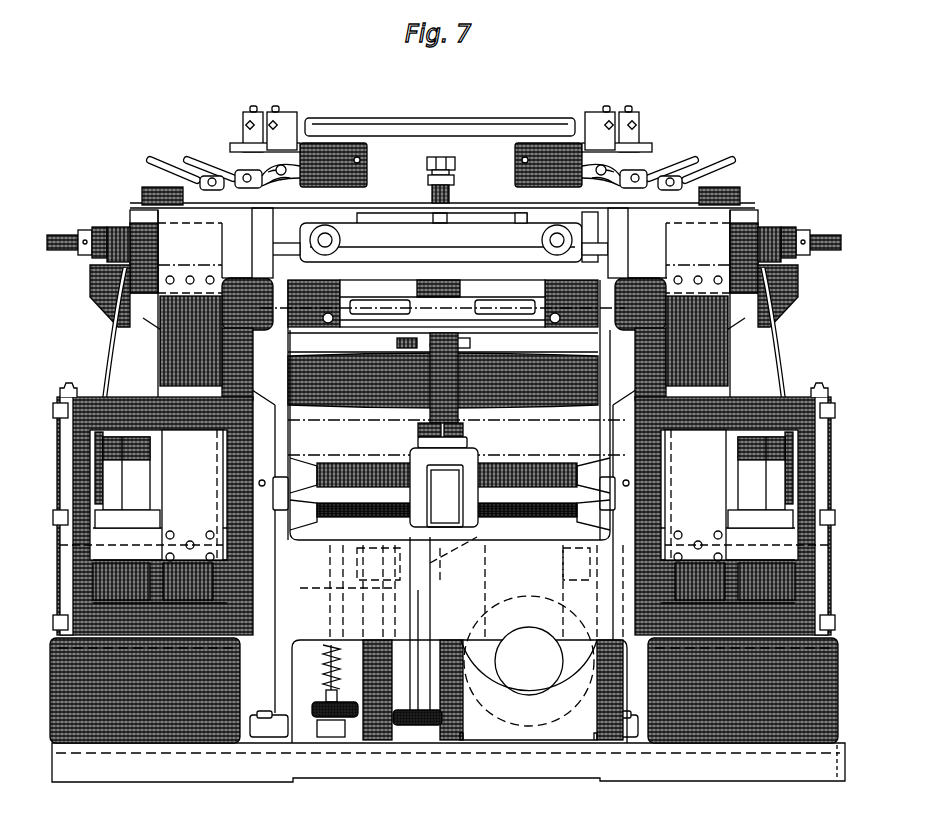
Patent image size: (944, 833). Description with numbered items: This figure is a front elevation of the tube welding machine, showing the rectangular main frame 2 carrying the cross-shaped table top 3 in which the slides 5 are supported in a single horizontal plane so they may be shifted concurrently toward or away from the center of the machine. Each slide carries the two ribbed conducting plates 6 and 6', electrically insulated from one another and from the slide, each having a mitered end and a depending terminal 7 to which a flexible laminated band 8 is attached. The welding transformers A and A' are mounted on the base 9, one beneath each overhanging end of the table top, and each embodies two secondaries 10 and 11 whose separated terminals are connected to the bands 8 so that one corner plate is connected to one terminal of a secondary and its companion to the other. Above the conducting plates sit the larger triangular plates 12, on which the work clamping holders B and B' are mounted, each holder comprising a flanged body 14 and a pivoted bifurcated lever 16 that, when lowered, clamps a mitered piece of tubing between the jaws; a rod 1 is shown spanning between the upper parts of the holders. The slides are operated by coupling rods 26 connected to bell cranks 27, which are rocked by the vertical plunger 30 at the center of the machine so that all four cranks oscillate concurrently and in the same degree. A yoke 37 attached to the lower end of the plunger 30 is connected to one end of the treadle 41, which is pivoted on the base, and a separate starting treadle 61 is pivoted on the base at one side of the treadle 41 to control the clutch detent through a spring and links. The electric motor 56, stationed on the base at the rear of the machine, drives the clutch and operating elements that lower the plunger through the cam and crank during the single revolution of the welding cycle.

The tie bar 1 is at (460, 118).
The main frame 2 is at (603, 436).
The table top 3 is at (444, 243).
The slide 5 is at (62, 292).
The ribbed plate 6 is at (541, 205).
The ribbed plate 6' is at (418, 181).
The depending terminal 7 is at (130, 226).
The flexible laminated band 8 is at (116, 323).
The base 9 is at (448, 762).
The secondary 10 is at (444, 482).
The secondary 11 is at (186, 563).
The plate 12 is at (143, 192).
The flanged body 14 is at (513, 169).
The bifurcated lever 16 is at (168, 168).
The coupling rod 26 is at (812, 236).
The bell crank 27 is at (443, 372).
The vertical plunger 30 is at (460, 415).
The yoke 37 is at (470, 455).
The treadle 41 is at (420, 727).
The electric motor 56 is at (529, 661).
The treadle 61 is at (328, 701).
The welding transformer A is at (153, 506).
The welding transformer A' is at (735, 502).
The clamping holder B is at (450, 119).
The clamping holder B' is at (441, 120).